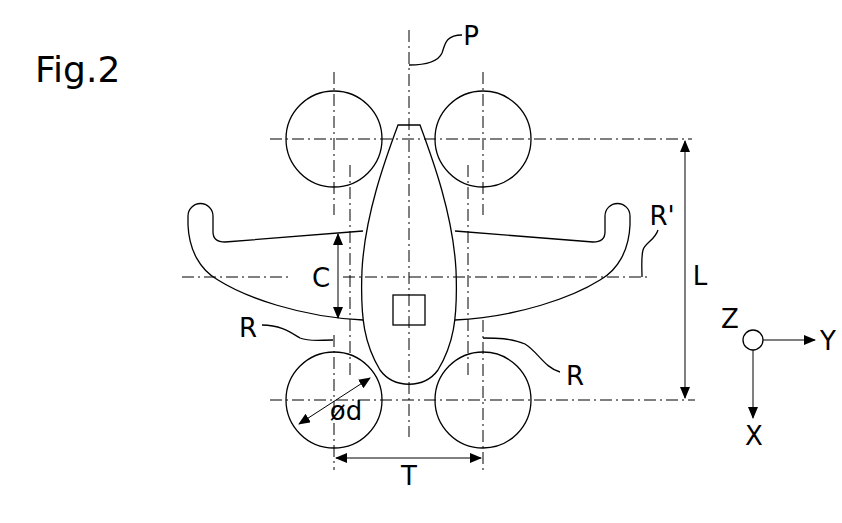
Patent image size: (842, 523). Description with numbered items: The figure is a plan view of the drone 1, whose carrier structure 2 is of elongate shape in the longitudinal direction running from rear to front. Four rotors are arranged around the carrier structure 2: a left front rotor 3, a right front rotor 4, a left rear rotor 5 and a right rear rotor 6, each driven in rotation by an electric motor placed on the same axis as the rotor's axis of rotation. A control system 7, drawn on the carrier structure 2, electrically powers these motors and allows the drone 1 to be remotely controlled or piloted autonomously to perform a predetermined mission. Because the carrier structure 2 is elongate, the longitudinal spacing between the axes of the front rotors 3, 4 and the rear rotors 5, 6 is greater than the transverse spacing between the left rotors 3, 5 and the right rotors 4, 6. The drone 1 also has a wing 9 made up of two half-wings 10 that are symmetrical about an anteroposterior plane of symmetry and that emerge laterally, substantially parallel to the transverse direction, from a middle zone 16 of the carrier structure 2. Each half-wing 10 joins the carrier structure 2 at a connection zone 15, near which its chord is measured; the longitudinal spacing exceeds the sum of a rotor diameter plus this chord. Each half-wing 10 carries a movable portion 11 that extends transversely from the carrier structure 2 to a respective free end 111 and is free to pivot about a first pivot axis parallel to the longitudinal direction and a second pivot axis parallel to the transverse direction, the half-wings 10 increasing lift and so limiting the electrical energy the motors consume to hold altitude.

The drone 1 is at (220, 107).
The carrier structure 2 is at (427, 198).
The left front rotor 3 is at (510, 418).
The right front rotor 4 is at (310, 378).
The left rear rotor 5 is at (507, 113).
The right rear rotor 6 is at (310, 113).
The control system 7 is at (425, 303).
The wing 9 is at (166, 235).
The half-wing 10 is at (203, 296).
The movable portion 11 is at (258, 242).
The connection zone 15 is at (360, 208).
The middle zone 16 is at (409, 262).
The free end 111 is at (188, 238).